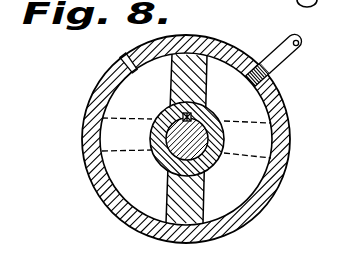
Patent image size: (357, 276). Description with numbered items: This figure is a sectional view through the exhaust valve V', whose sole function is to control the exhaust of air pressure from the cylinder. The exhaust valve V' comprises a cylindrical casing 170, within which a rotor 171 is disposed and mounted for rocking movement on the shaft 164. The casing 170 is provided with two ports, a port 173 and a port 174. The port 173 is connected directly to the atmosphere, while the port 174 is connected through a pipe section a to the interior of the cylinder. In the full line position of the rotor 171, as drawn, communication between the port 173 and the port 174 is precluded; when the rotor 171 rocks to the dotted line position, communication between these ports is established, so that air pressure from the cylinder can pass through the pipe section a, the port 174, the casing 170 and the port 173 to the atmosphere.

The exhaust valve V' is at (177, 140).
The cylindrical casing 170 is at (175, 140).
The rotor 171 is at (170, 199).
The port 173 is at (120, 66).
The port 174 is at (271, 60).
The pipe section a is at (288, 56).
The shaft 164 is at (177, 141).